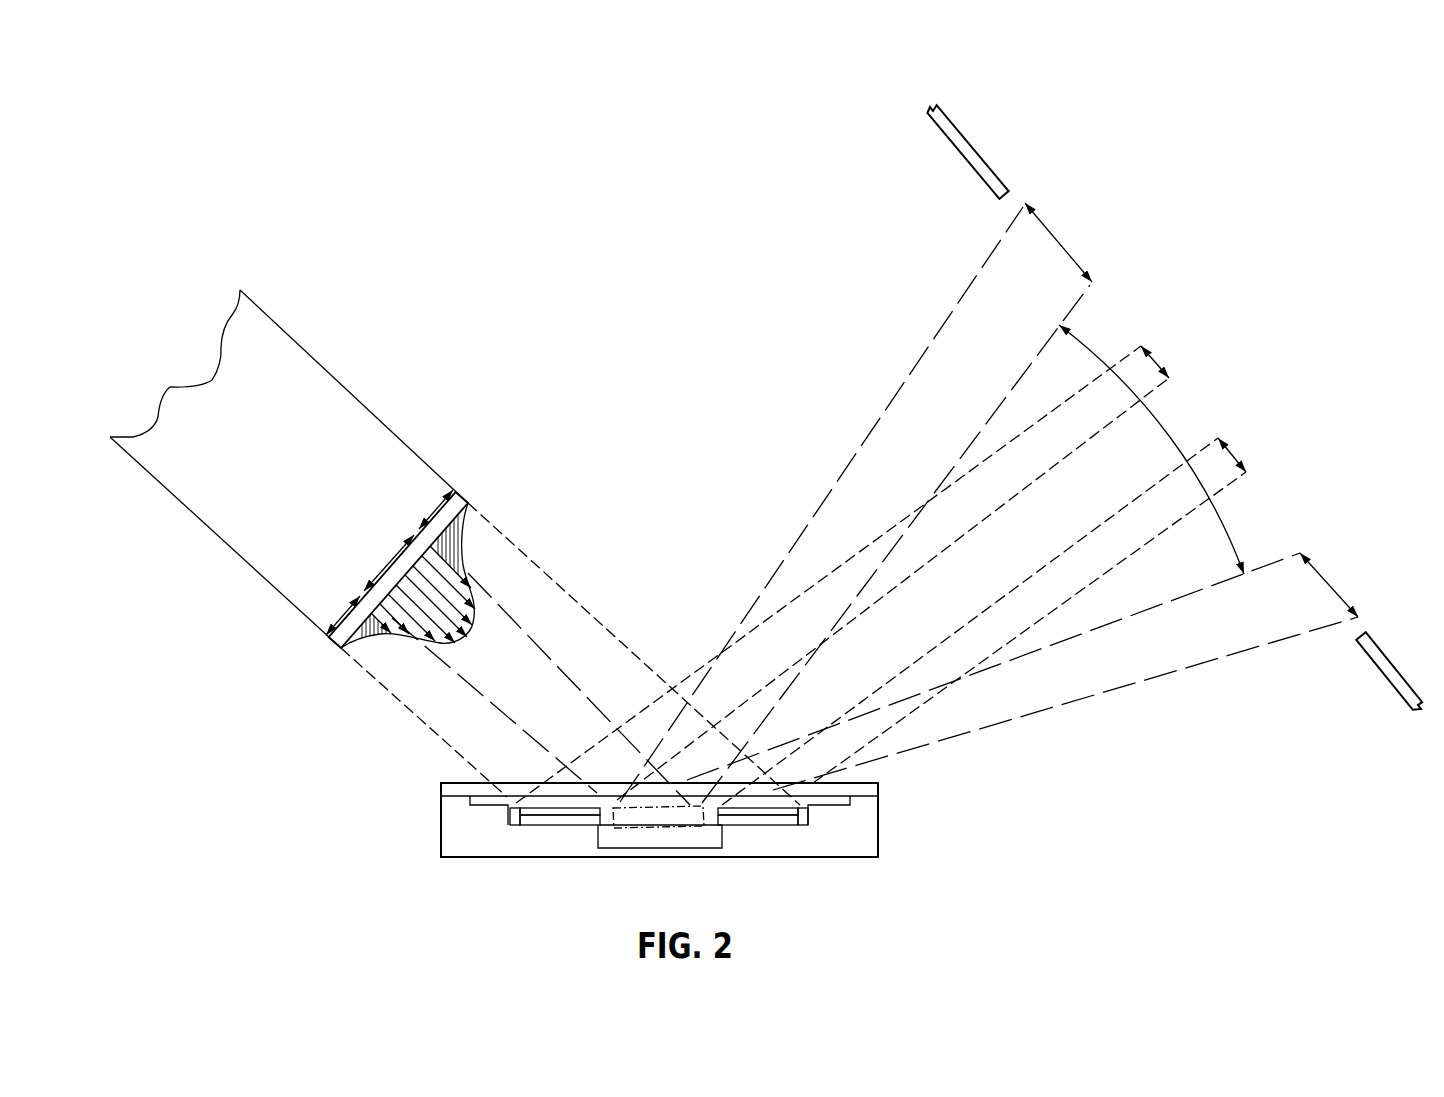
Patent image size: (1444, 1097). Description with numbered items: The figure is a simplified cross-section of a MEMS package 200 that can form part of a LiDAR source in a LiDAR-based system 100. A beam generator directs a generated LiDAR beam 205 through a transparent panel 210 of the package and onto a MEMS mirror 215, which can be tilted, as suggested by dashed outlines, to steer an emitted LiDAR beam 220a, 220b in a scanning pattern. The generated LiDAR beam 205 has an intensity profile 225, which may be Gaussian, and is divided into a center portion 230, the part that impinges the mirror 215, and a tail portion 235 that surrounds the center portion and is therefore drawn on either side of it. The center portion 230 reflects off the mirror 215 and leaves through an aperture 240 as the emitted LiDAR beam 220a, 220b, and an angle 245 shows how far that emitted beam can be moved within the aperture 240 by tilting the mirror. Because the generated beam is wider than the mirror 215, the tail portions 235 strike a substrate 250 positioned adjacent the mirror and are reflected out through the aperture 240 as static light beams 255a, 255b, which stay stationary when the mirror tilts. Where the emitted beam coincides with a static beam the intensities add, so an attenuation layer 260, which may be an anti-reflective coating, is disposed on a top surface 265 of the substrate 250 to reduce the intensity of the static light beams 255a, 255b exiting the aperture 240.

The LiDAR-based system 100 is at (840, 113).
The MEMS package 200 is at (417, 765).
The generated LiDAR beam 205 is at (272, 440).
The transparent panel 210 is at (880, 787).
The MEMS mirror 215 is at (642, 820).
The emitted LiDAR beam 220a is at (1050, 230).
The emitted LiDAR beam 220b is at (1320, 566).
The intensity profile 225 is at (478, 612).
The center portion 230 is at (400, 563).
The tail portion 235 is at (434, 500).
The aperture 240 is at (1008, 194).
The angle 245 is at (1167, 432).
The substrate 250 is at (538, 827).
The static light beam 255a is at (1158, 366).
The static light beam 255b is at (1233, 457).
The attenuation layer 260 is at (523, 830).
The top surface 265 is at (573, 815).